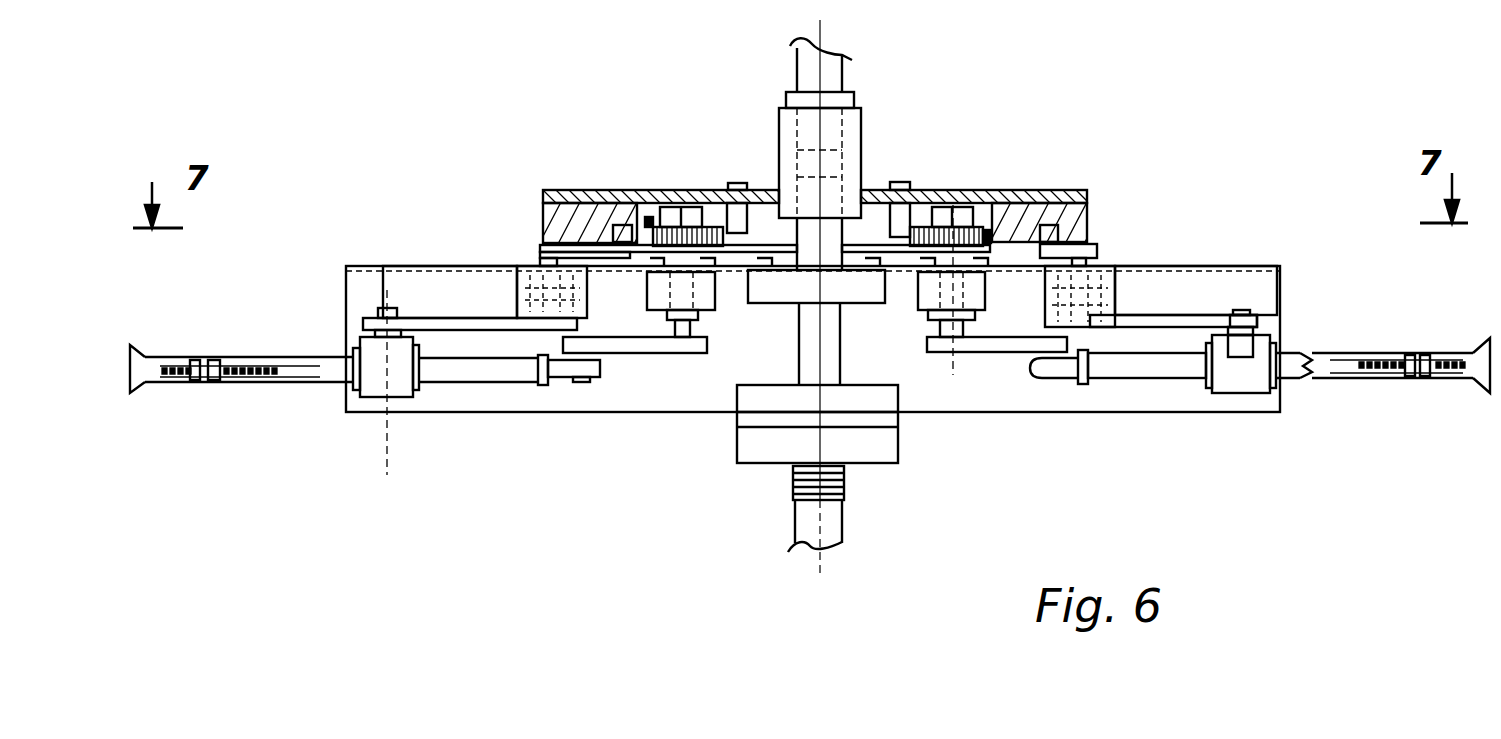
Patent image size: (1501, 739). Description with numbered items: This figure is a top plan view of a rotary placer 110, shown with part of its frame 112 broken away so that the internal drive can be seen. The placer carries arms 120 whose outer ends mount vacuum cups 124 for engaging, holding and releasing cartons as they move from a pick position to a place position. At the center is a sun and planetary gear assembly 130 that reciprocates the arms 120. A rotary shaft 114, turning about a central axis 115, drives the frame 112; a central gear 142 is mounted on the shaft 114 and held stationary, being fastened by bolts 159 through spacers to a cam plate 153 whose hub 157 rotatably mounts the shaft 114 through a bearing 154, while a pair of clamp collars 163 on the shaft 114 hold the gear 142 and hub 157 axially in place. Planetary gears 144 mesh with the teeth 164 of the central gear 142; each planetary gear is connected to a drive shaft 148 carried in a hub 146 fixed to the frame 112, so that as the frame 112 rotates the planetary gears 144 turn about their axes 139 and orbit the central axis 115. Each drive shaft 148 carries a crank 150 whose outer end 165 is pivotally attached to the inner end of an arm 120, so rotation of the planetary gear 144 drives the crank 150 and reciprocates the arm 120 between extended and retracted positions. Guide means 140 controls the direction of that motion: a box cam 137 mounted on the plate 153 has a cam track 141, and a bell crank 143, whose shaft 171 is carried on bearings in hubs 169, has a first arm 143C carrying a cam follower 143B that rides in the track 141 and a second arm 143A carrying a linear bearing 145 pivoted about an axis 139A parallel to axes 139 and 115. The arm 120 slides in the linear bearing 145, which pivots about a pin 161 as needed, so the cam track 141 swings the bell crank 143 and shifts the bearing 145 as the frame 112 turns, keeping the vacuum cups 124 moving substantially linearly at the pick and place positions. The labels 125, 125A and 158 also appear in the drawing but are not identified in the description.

The rotary placer 110 is at (953, 122).
The frame 112 is at (360, 422).
The rotary shaft 114 is at (790, 378).
The axis 115 is at (828, 517).
The arm 120 is at (333, 372).
The vacuum cup 124 is at (137, 392).
The rod 125 is at (237, 358).
The rod 125A is at (1325, 360).
The sun and planetary gear assembly 130 is at (898, 262).
The box cam 137 is at (1088, 210).
The axis 139 is at (952, 355).
The axis 139A is at (387, 452).
The guide means 140 is at (408, 298).
The cam track 141 is at (621, 231).
The central gear 142 is at (922, 193).
The bell crank 143 is at (1152, 342).
The arm of bell crank 143A is at (430, 327).
The cam follower 143B is at (648, 212).
The first arm of bell crank 143C is at (538, 260).
The planetary gear 144 is at (649, 203).
The linear bearing 145 is at (370, 355).
The hub 146 is at (650, 290).
The drive shaft 148 is at (665, 350).
The crank 150 is at (612, 340).
The cam plate 153 is at (1068, 189).
The bearing 154 is at (843, 180).
The hub 157 is at (851, 118).
The plate 158 is at (703, 190).
The bolt 159 is at (737, 183).
The pin 161 is at (366, 321).
The clamp collar 163 is at (795, 268).
The teeth 164 is at (677, 205).
The outer end of crank 165 is at (563, 340).
The hub 169 is at (516, 290).
The shaft of bell crank 171 is at (538, 267).